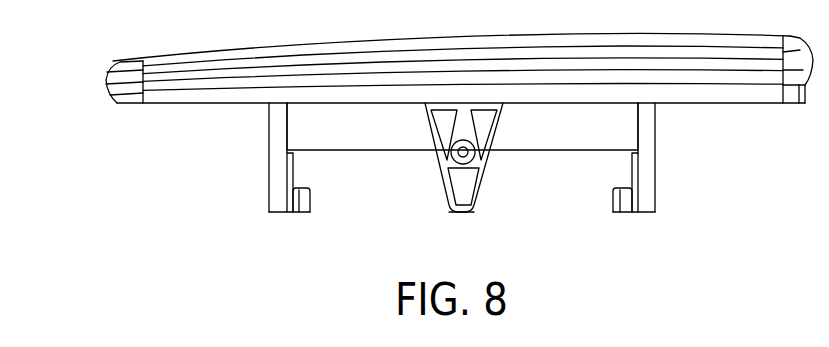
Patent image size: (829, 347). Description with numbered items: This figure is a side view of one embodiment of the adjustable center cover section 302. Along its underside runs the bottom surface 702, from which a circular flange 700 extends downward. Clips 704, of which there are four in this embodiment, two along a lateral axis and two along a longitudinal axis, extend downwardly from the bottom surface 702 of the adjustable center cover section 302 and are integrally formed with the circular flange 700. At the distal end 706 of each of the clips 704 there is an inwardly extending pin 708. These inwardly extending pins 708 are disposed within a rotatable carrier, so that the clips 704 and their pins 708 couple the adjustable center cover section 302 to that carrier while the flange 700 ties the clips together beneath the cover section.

The adjustable center cover section 302 is at (108, 80).
The circular flange 700 is at (553, 133).
The bottom surface 702 is at (178, 103).
The clips 704 is at (269, 190).
The distal end 706 is at (277, 212).
The inwardly extending pin 708 is at (300, 212).